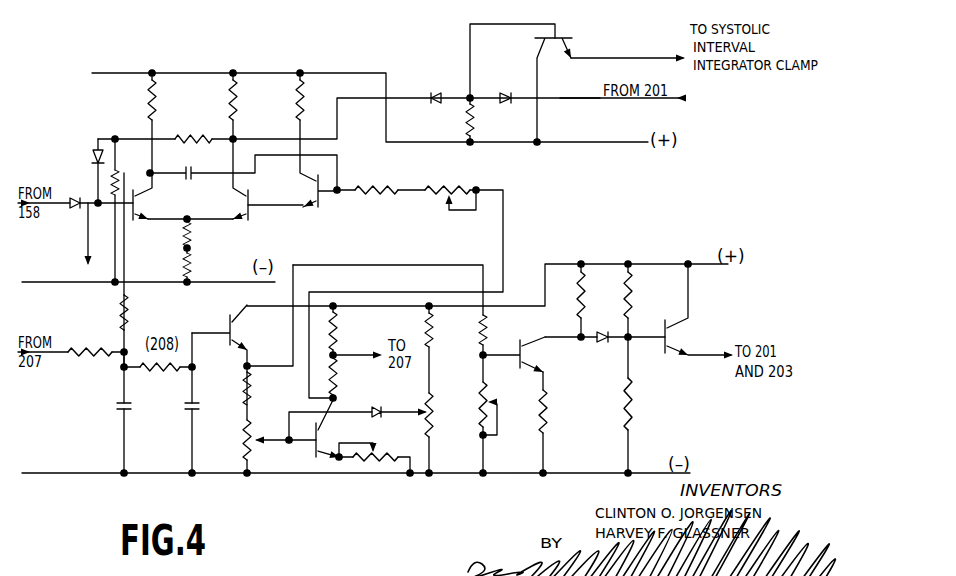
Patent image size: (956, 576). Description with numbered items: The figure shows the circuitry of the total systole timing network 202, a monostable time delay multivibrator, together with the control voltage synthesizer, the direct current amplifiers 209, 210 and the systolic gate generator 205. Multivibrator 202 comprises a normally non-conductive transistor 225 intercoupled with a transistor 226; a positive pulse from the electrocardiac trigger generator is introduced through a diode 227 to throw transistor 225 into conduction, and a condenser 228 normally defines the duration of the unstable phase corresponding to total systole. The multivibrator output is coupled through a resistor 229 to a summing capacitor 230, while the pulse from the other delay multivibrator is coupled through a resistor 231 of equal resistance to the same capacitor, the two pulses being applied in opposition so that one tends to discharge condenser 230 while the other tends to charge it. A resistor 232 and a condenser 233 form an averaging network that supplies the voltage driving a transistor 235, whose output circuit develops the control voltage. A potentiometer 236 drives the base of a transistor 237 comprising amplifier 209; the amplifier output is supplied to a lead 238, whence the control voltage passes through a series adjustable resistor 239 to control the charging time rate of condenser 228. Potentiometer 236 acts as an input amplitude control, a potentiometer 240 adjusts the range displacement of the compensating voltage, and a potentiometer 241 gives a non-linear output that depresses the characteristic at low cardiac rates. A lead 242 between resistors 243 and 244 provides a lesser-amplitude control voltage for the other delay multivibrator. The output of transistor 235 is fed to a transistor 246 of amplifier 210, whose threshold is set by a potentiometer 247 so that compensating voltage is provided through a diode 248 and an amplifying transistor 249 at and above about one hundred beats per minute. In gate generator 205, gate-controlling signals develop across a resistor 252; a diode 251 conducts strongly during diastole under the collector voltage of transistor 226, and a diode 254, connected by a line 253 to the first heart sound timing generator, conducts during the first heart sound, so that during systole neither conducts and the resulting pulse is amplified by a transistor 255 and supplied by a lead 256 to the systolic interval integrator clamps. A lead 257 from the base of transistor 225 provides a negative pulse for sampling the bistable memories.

The transistor 225 is at (137, 211).
The transistor 226 is at (237, 208).
The diode 227 is at (78, 212).
The condenser 228 is at (194, 170).
The resistor 229 is at (130, 322).
The summing capacitor 230 is at (111, 410).
The resistor 231 is at (72, 359).
The resistor 232 is at (141, 375).
The condenser 233 is at (181, 410).
The transistor 235 is at (240, 334).
The potentiometer 236 is at (245, 453).
The transistor 237 is at (312, 445).
The lead 238 is at (307, 393).
The series adjustable resistor 239 is at (438, 196).
The potentiometer 240 is at (368, 463).
The potentiometer 241 is at (433, 425).
The lead 242 is at (357, 352).
The resistor 243 is at (340, 384).
The resistor 244 is at (340, 322).
The transistor 246 is at (498, 355).
The potentiometer 247 is at (477, 398).
The diode 248 is at (597, 345).
The amplifying transistor 249 is at (672, 335).
The diode 251 is at (433, 94).
The resistor 252 is at (466, 122).
The line 253 is at (583, 96).
The diode 254 is at (500, 86).
The transistor 255 is at (562, 36).
The lead 256 is at (636, 57).
The lead 257 is at (86, 249).
The total systole timing network 202 is at (364, 165).
The systolic gate generator 205 is at (434, 53).
The direct current amplifier 209 is at (446, 428).
The direct current amplifier 210 is at (668, 418).